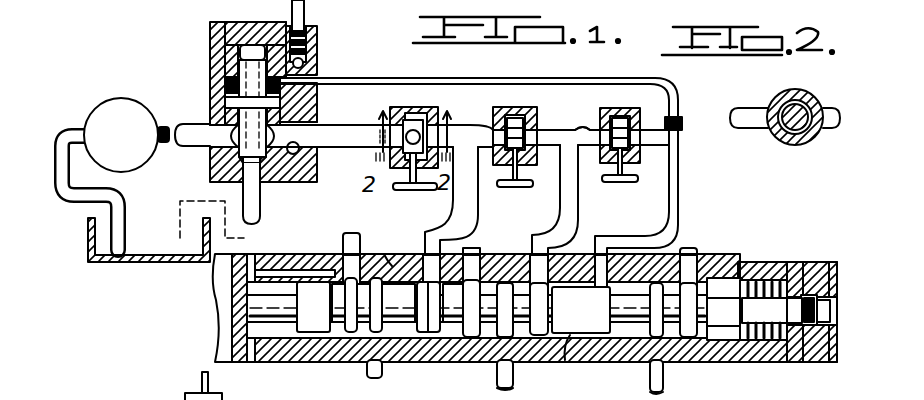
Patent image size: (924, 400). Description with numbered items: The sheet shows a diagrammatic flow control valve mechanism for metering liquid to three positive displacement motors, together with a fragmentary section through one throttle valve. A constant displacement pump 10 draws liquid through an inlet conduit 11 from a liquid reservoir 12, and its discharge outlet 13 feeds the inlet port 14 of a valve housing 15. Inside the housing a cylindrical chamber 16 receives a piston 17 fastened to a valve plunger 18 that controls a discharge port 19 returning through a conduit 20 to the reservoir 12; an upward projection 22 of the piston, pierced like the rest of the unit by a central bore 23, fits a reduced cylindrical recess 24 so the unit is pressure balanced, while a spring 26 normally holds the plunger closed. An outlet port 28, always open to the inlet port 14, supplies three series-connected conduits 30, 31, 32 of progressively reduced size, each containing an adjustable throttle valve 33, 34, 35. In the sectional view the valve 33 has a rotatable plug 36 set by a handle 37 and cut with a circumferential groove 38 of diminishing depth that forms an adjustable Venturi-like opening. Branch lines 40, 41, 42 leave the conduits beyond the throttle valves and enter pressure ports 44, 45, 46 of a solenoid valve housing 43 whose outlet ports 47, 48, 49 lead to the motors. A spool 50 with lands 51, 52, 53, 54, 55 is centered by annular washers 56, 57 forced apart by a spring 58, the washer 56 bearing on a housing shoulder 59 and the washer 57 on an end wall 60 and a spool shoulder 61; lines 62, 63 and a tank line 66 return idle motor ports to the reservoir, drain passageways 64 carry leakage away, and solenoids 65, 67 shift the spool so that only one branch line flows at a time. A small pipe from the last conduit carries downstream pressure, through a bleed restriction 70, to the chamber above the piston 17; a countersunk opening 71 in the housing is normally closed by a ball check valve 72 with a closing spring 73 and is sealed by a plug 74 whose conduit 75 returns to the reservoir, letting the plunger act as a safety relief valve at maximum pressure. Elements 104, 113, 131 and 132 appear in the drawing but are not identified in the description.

In FIG. 1, the constant displacement pump 10 is at (132, 108).
In FIG. 1, the inlet conduit 11 is at (68, 128).
In FIG. 1, the liquid reservoir 12 is at (126, 262).
In FIG. 1, the discharge outlet 13 is at (163, 125).
In FIG. 1, the inlet port 14 is at (206, 126).
In FIG. 1, the valve housing 15 is at (210, 55).
In FIG. 1, the cylindrical chamber 16 is at (227, 85).
In FIG. 1, the piston 17 is at (282, 103).
In FIG. 1, the valve plunger 18 is at (285, 120).
In FIG. 1, the discharge port 19 is at (262, 196).
In FIG. 1, the conduit 20 is at (218, 194).
In FIG. 1, the upward projection 22 is at (240, 50).
In FIG. 1, the central bore 23 is at (242, 30).
In FIG. 1, the reduced cylindrical recess 24 is at (255, 45).
In FIG. 1, the spring 26 is at (310, 95).
In FIG. 1, the outlet port 28 is at (296, 152).
In FIG. 1, the conduit 30 is at (336, 142).
In FIG. 1, the conduit 31 is at (494, 114).
In FIG. 1, the conduit 32 is at (587, 129).
In FIG. 2, the throttle valve 33 is at (806, 104).
In FIG. 1, the throttle valve 34 is at (530, 110).
In FIG. 1, the throttle valve 35 is at (428, 108).
In FIG. 1, the rotatable plug 36 is at (414, 110).
In FIG. 2, the rotatable plug 36 is at (798, 146).
In FIG. 1, the handle 37 is at (414, 190).
In FIG. 2, the circumferential groove 38 is at (766, 106).
In FIG. 1, the branch line 40 is at (480, 220).
In FIG. 1, the branch line 41 is at (580, 212).
In FIG. 1, the branch line 42 is at (680, 210).
In FIG. 1, the valve housing 43 is at (292, 260).
In FIG. 1, the pressure port 44 is at (396, 262).
In FIG. 1, the pressure port 45 is at (550, 252).
In FIG. 1, the pressure port 46 is at (624, 253).
In FIG. 1, the outlet port 47 is at (368, 365).
In FIG. 1, the outlet port 48 is at (510, 362).
In FIG. 1, the outlet port 49 is at (650, 378).
In FIG. 1, the spool 50 is at (470, 338).
In FIG. 1, the land 51 is at (308, 336).
In FIG. 1, the land 52 is at (428, 337).
In FIG. 1, the land 53 is at (497, 372).
In FIG. 1, the land 54 is at (566, 362).
In FIG. 1, the land 55 is at (690, 360).
In FIG. 1, the annular washer 56 is at (742, 362).
In FIG. 1, the annular washer 57 is at (790, 362).
In FIG. 1, the spring 58 is at (772, 290).
In FIG. 1, the shoulder 59 is at (568, 80).
In FIG. 1, the end wall 60 is at (810, 268).
In FIG. 1, the shoulder 61 is at (832, 276).
In FIG. 1, the line 62 is at (348, 234).
In FIG. 1, the line 63 is at (697, 246).
In FIG. 1, the drain passageway 64 is at (268, 260).
In FIG. 1, the solenoid 65 is at (216, 300).
In FIG. 1, the tank line 66 is at (480, 248).
In FIG. 1, the solenoid 67 is at (834, 362).
In FIG. 1, the bleed restriction 70 is at (682, 126).
In FIG. 1, the countersunk opening 71 is at (306, 61).
In FIG. 1, the ball check valve 72 is at (318, 79).
In FIG. 1, the closing spring 73 is at (308, 46).
In FIG. 1, the plug 74 is at (318, 36).
In FIG. 1, the conduit 75 is at (305, 12).
In FIG. 1, the outlet 104 is at (511, 394).
In FIG. 1, the outlet 113 is at (627, 394).
In FIG. 1, the switch 131 is at (224, 399).
In FIG. 1, the lever 132 is at (185, 398).